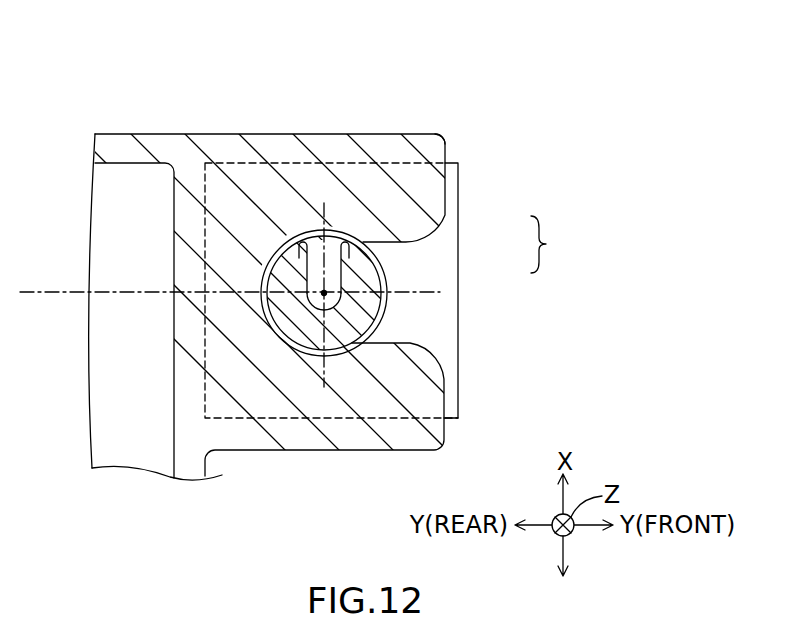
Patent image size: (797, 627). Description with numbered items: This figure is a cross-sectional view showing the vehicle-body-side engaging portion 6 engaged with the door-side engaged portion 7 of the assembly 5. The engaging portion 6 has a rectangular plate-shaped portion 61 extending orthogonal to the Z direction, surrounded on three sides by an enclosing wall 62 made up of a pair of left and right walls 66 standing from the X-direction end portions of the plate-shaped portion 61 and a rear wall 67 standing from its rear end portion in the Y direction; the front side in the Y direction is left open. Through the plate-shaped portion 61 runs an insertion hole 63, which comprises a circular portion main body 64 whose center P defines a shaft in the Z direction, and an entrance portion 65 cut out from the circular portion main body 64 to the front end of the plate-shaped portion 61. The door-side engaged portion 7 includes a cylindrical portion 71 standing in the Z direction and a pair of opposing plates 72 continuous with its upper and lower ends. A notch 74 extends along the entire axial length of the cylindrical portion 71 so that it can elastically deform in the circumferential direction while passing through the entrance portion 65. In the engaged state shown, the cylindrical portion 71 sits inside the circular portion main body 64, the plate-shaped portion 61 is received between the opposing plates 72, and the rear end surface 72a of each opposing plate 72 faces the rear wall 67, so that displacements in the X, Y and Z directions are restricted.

The vehicle body assembly 5 is at (563, 70).
The vehicle-body-side engaging portion 6 is at (197, 129).
The plate-shaped portion 61 is at (244, 178).
The enclosing wall 62 is at (418, 131).
The insertion hole 63 is at (554, 244).
The circular portion main body 64 is at (393, 249).
The entrance portion 65 is at (385, 269).
The left and right walls 66 is at (383, 137).
The rear wall 67 is at (187, 368).
The door-side engaged portion 7 is at (462, 400).
The cylindrical portion 71 is at (353, 258).
The opposing plates 72 is at (433, 325).
The rear end surface 72a is at (205, 233).
The notch 74 is at (303, 237).
The center P is at (338, 290).